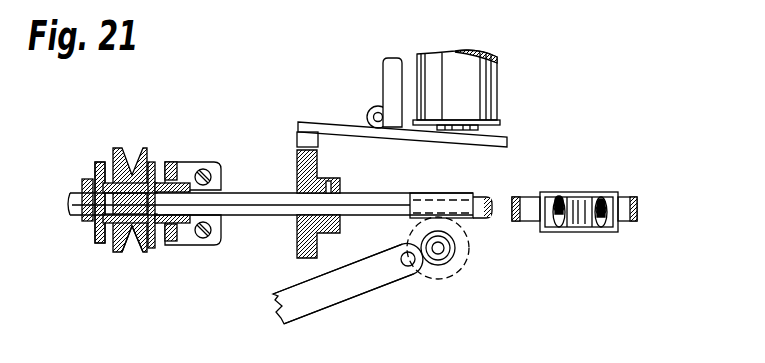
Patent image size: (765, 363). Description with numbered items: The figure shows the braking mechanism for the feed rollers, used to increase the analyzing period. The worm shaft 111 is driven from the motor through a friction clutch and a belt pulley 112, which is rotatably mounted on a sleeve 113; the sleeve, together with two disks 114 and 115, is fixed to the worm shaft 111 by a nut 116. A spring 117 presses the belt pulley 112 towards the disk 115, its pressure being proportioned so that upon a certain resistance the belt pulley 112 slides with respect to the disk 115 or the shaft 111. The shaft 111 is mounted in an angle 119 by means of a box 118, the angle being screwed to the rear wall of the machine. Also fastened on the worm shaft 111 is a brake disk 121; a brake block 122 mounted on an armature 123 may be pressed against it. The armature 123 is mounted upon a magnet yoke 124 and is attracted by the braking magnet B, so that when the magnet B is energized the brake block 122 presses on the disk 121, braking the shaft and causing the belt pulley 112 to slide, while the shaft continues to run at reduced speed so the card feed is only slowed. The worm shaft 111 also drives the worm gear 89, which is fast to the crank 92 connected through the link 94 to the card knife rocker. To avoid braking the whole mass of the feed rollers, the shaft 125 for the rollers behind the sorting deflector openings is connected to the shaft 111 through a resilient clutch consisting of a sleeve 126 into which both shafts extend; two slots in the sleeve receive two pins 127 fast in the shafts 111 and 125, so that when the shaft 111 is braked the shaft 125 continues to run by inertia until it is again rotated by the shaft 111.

The worm shaft 111 is at (255, 193).
The belt pulley 112 is at (135, 177).
The sleeve 113 is at (131, 228).
The disk 114 is at (101, 180).
The disk 115 is at (157, 225).
The nut 116 is at (87, 213).
The spring 117 is at (103, 229).
The box 118 is at (163, 183).
The angle 119 is at (214, 236).
The brake disk 121 is at (310, 255).
The brake block 122 is at (309, 137).
The armature 123 is at (350, 129).
The magnet yoke 124 is at (393, 73).
The shaft 125 is at (628, 197).
The sleeve 126 is at (582, 192).
The pins 127 is at (600, 232).
The worm gear 89 is at (458, 264).
The crank 92 is at (427, 264).
The link 94 is at (347, 283).
The braking magnet B is at (470, 97).